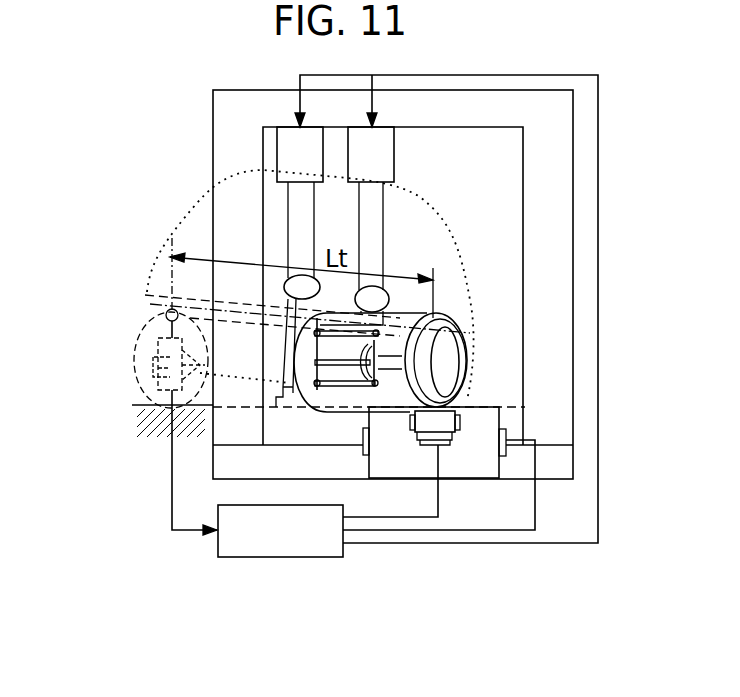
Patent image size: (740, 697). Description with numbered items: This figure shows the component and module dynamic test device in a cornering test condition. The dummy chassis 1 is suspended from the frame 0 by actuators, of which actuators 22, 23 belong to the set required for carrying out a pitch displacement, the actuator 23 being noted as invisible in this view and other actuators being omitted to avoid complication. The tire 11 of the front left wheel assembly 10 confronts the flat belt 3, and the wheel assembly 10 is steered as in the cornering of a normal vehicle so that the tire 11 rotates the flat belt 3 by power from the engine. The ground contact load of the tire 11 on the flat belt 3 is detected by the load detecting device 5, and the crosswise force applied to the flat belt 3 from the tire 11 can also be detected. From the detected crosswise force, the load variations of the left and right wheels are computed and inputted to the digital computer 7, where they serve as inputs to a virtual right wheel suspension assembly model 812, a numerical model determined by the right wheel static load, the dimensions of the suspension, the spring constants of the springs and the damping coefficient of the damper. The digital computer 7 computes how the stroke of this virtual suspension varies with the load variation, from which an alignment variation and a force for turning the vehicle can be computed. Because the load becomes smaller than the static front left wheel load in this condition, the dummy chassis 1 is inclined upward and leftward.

The frame 0 is at (583, 119).
The dummy chassis 1 is at (282, 417).
The flat belt 3 is at (453, 467).
The load detecting device 5 is at (457, 423).
The digital computer 7 is at (268, 557).
The front left wheel assembly 10 is at (470, 335).
The tire 11 is at (468, 368).
The actuator 22 is at (383, 161).
The actuator 23 is at (285, 157).
The virtual right wheel suspension assembly model 812 is at (133, 355).